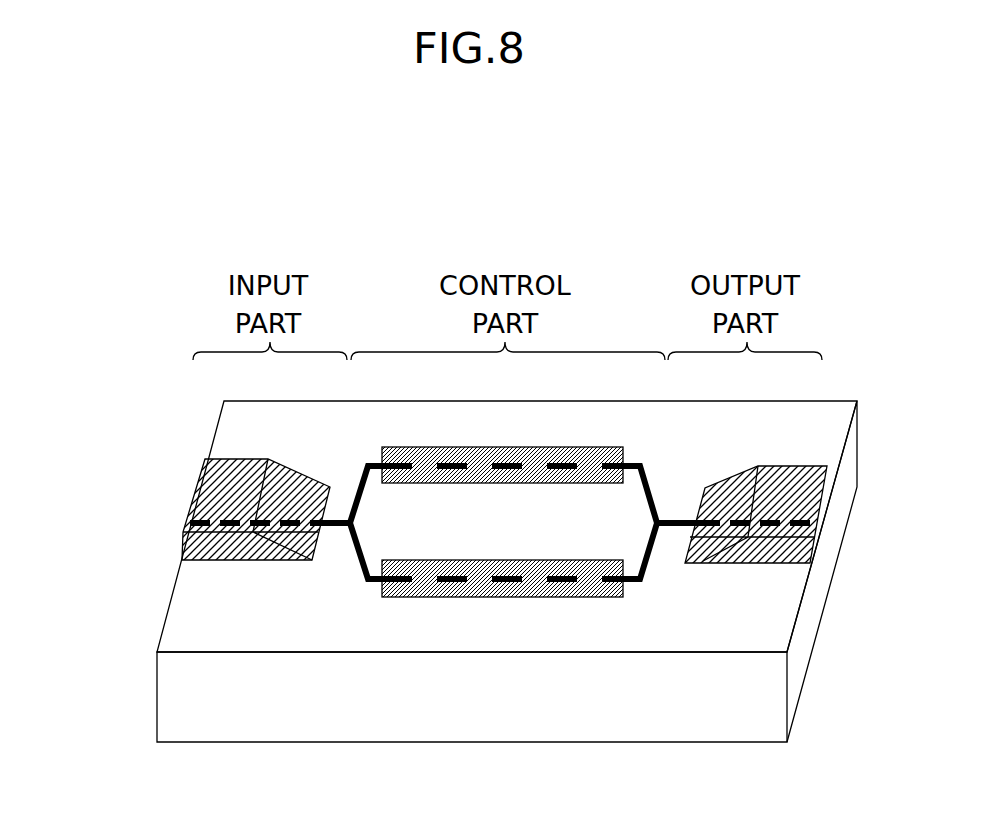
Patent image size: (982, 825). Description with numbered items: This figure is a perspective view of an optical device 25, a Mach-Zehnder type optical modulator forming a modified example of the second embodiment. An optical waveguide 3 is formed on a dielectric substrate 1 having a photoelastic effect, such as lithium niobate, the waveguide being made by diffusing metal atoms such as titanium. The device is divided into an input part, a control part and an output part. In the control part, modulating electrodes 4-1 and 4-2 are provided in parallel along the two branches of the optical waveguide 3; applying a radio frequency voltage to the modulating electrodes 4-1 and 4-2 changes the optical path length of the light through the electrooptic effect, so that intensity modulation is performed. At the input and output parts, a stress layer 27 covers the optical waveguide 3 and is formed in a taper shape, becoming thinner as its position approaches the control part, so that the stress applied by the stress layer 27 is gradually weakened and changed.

The optical device 25 is at (70, 197).
The dielectric substrate 1 is at (163, 712).
The stress layer 27 is at (197, 487).
The optical waveguide 3 is at (363, 565).
The modulating electrode 4-1 is at (547, 447).
The modulating electrode 4-2 is at (543, 597).